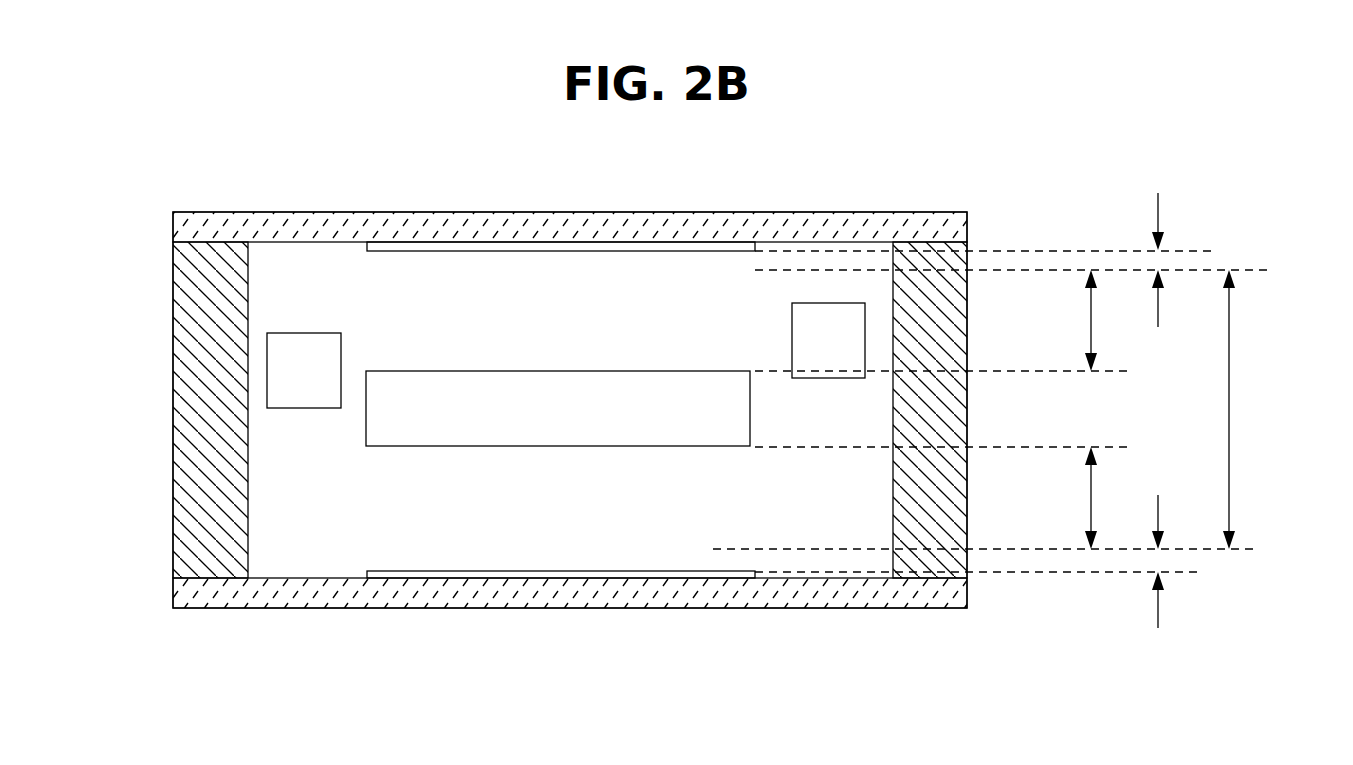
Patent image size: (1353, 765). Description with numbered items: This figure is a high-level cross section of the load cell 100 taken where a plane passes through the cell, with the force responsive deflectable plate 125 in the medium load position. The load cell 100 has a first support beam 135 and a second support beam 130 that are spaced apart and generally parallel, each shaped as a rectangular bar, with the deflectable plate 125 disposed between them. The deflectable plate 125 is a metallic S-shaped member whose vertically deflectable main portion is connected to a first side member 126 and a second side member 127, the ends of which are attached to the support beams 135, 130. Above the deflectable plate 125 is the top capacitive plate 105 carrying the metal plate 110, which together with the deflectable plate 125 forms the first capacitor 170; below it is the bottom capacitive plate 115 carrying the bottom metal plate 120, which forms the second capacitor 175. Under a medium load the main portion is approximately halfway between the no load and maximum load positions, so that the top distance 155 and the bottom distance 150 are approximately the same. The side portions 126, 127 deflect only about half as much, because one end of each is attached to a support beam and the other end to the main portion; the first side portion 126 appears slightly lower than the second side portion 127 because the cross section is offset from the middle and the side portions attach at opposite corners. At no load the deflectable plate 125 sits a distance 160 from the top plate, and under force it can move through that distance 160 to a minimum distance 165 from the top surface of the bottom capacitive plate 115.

The load cell 100 is at (233, 138).
The top capacitive plate 105 is at (825, 227).
The metal plate 110 is at (612, 245).
The bottom capacitive plate 115 is at (823, 595).
The bottom metal plate 120 is at (604, 578).
The force responsive deflectable plate 125 is at (367, 431).
The first side member 126 is at (293, 360).
The second side member 127 is at (845, 318).
The second support beam 130 is at (910, 408).
The first support beam 135 is at (200, 497).
The bottom distance 150 is at (1087, 490).
The top distance 155 is at (1087, 315).
The distance 160 is at (1158, 207).
The minimum distance 165 is at (1158, 615).
The first capacitor 170 is at (510, 315).
The second capacitor 175 is at (542, 501).